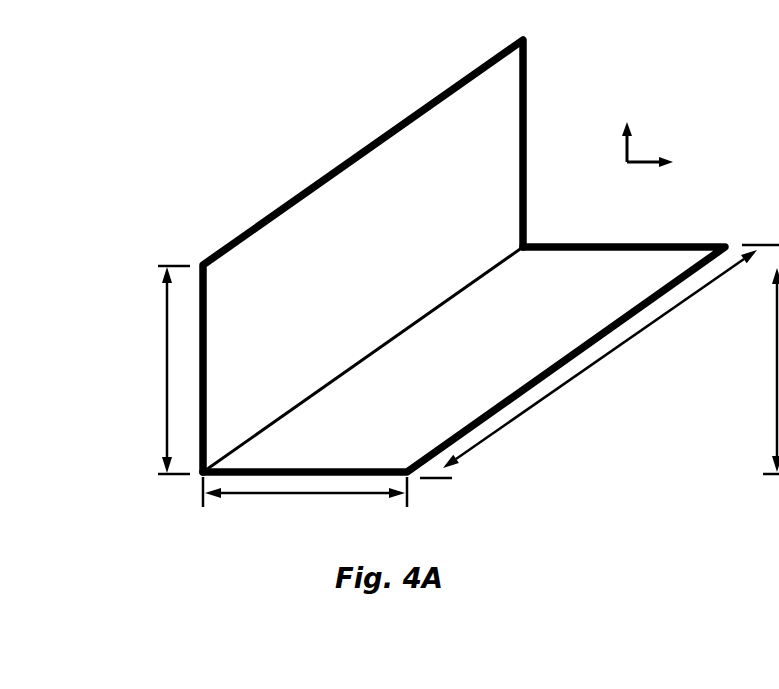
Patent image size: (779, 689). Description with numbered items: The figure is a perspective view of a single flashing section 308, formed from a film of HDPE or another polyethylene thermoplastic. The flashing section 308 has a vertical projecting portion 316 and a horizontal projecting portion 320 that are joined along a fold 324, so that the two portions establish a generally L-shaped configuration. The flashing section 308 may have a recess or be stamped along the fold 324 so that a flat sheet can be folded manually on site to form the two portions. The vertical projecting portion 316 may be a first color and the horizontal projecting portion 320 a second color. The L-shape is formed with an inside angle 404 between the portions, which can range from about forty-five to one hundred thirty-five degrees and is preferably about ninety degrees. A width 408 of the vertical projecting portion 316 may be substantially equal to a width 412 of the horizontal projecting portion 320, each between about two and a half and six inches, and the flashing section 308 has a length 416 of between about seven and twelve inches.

The flashing section 308 is at (462, 256).
The vertical projecting portion 316 is at (463, 165).
The horizontal projecting portion 320 is at (607, 268).
The fold 324 is at (461, 297).
The inside angle 404 is at (647, 147).
The width of the vertical projecting portion 408 is at (160, 358).
The width of the horizontal projecting portion 412 is at (323, 502).
The length 416 is at (623, 347).